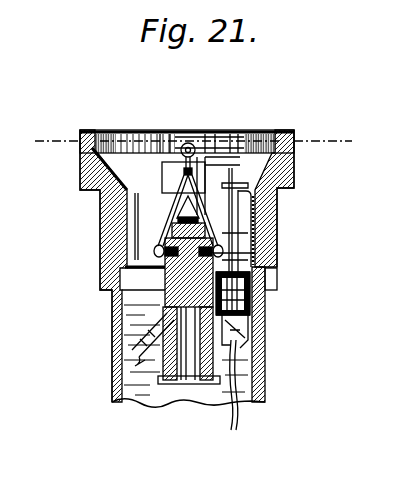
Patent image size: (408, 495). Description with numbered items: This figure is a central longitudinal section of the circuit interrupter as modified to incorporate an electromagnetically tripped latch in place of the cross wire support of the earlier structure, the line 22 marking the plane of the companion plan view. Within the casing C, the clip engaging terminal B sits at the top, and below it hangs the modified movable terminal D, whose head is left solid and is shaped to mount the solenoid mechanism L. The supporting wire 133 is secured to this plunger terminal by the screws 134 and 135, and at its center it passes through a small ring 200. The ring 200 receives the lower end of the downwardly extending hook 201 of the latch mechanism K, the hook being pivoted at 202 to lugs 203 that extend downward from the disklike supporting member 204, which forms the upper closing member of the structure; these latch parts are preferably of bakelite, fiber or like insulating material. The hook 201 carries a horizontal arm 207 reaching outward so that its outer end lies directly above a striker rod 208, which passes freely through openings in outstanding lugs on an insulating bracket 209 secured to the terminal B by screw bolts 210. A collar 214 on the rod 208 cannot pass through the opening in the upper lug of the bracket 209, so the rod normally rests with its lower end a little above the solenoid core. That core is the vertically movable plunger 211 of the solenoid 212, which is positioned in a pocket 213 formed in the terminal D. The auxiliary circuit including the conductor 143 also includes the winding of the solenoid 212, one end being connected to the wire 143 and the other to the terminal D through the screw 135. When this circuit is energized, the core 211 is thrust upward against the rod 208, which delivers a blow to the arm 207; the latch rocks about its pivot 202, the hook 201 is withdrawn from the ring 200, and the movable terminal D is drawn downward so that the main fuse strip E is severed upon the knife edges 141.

The section line 22- 22 is at (338, 141).
The clip engaging terminal B is at (82, 186).
The ring 200 is at (96, 176).
The collar 214 is at (294, 162).
The horizontal arm 207 is at (258, 142).
The disklike supporting member 204 is at (170, 136).
The lugs 203 is at (200, 144).
The latch mechanism K is at (240, 140).
The pivot 202 is at (182, 147).
The latch hook 201 is at (180, 166).
The supporting wire 133 is at (172, 225).
The knife edges 141 is at (167, 208).
The main fuse strip E is at (165, 200).
The screw 134 is at (155, 252).
The casing C is at (108, 340).
The movable terminal D is at (148, 355).
The bracket 209 is at (278, 190).
The striker rod 208 is at (276, 228).
The screw bolts 210 is at (280, 250).
The screw 135 is at (248, 253).
The solenoid plunger 211 is at (280, 279).
The solenoid 212 is at (256, 305).
The pocket 213 is at (262, 322).
The solenoid mechanism L is at (262, 328).
The conductor 143 is at (240, 402).